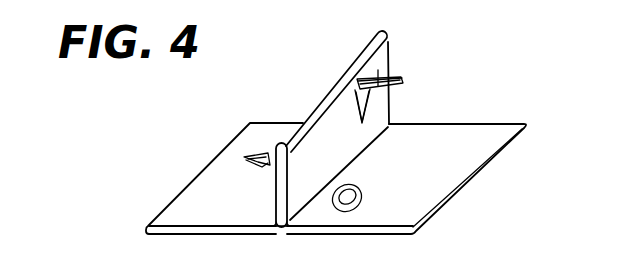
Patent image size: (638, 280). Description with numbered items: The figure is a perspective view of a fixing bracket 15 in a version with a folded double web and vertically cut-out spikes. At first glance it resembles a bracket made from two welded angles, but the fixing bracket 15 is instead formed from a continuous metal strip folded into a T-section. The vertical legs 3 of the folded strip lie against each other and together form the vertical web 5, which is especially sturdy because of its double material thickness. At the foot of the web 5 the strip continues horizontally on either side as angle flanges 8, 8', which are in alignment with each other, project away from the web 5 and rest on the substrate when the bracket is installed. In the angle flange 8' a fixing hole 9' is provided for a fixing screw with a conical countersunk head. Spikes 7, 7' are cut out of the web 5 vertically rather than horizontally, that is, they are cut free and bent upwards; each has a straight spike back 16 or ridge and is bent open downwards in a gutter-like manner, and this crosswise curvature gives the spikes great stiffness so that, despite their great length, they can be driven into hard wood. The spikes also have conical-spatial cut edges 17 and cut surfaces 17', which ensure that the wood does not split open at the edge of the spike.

The vertical leg 3 is at (277, 187).
The vertical web 5 is at (329, 90).
The spike 7 is at (245, 128).
The spike 7' is at (419, 70).
The angle flange 8 is at (224, 201).
The angle flange 8' is at (406, 193).
The fixing hole 9' is at (354, 228).
The fixing bracket 15 is at (279, 245).
The spike back 16 is at (387, 66).
The cut edge 17 is at (203, 132).
The cut surface 17' is at (451, 100).